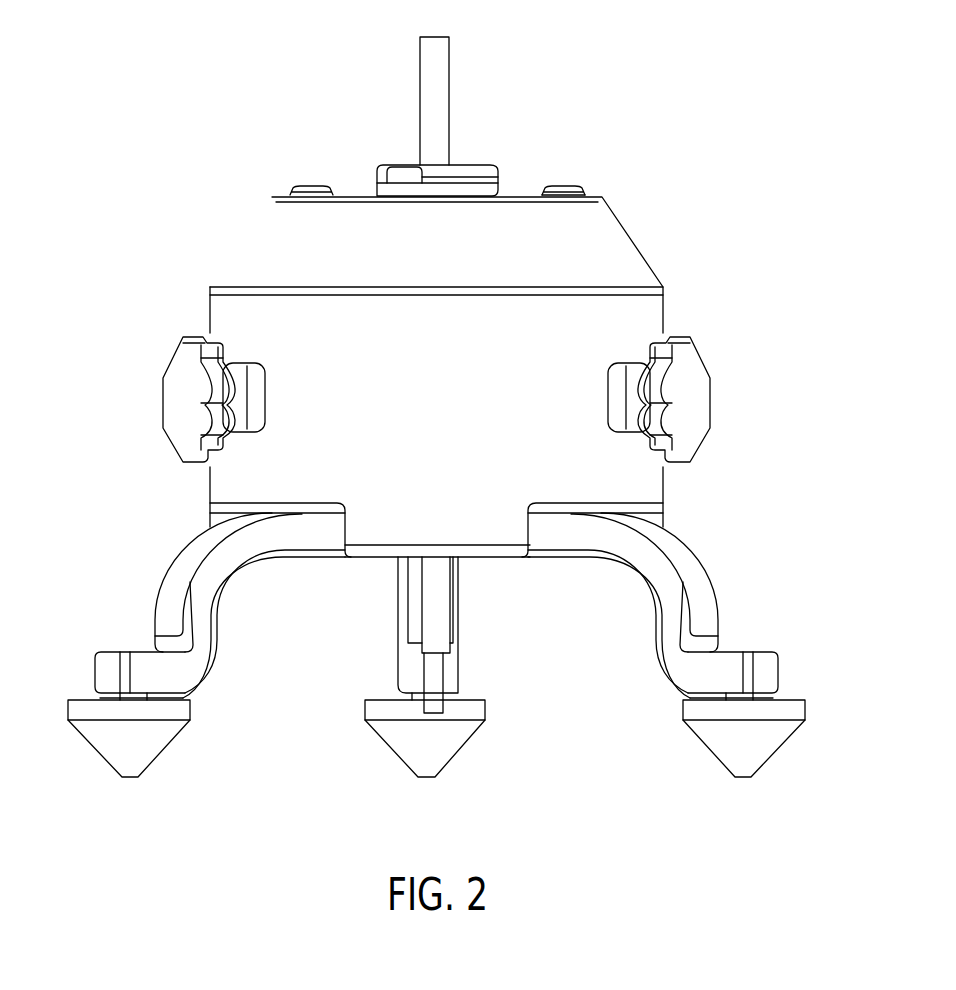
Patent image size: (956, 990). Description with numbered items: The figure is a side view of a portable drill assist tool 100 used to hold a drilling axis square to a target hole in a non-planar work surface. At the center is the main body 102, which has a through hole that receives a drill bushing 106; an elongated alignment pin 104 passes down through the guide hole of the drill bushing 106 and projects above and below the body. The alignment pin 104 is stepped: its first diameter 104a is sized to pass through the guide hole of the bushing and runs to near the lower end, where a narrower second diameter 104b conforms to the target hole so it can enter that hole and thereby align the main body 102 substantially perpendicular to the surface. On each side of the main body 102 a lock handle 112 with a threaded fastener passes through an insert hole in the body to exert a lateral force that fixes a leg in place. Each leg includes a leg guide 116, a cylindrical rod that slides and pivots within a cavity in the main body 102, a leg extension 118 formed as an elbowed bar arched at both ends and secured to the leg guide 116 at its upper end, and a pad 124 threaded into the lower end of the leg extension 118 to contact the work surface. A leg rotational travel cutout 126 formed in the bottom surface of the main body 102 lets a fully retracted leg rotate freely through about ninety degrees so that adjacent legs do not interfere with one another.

The portable drill assist tool 100 is at (644, 88).
The main body 102 is at (255, 233).
The alignment pin 104 is at (428, 92).
The first diameter 104a is at (437, 614).
The second diameter 104b is at (437, 683).
The drill bushing 106 is at (487, 168).
The lock handle 112 is at (698, 392).
The leg guide 116 is at (583, 190).
The leg extension 118 is at (178, 580).
The pad 124 is at (152, 743).
The leg rotational travel cutout 126 is at (660, 509).